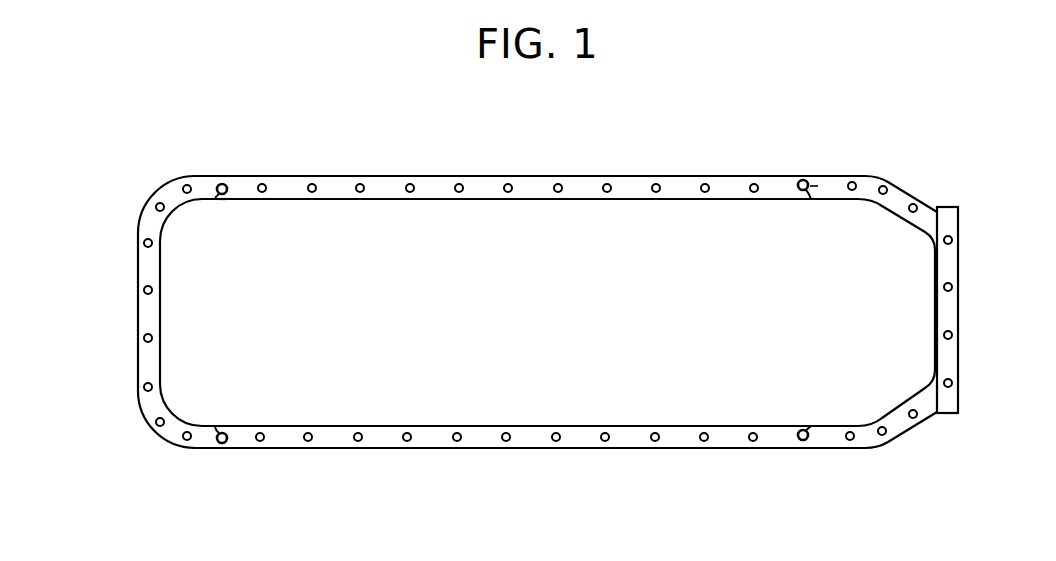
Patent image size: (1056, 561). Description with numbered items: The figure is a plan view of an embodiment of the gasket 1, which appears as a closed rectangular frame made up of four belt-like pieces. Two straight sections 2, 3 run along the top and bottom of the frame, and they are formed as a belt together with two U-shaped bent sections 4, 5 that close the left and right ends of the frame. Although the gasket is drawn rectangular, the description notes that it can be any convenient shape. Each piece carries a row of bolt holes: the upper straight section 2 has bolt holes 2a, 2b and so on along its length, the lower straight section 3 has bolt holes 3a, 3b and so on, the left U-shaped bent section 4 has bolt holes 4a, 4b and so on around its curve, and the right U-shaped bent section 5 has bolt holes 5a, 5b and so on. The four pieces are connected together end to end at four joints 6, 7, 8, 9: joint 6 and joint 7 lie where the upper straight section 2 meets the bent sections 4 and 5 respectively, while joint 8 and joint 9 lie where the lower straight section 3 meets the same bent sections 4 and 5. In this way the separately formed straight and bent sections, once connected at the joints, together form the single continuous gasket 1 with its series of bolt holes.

The gasket 1 is at (118, 173).
The straight section 2 is at (547, 175).
The bolt hole 2a is at (267, 183).
The bolt hole 2b is at (317, 184).
The straight section 3 is at (420, 451).
The bolt hole 3a is at (262, 452).
The bolt hole 3b is at (309, 452).
The U-shaped bent section 4 is at (136, 364).
The bolt hole 4a is at (217, 195).
The bolt hole 4b is at (184, 183).
The U-shaped bent section 5 is at (958, 266).
The bolt hole 5a is at (823, 184).
The bolt hole 5b is at (858, 184).
The joint 6 is at (215, 183).
The joint 7 is at (804, 179).
The joint 8 is at (219, 451).
The joint 9 is at (800, 452).